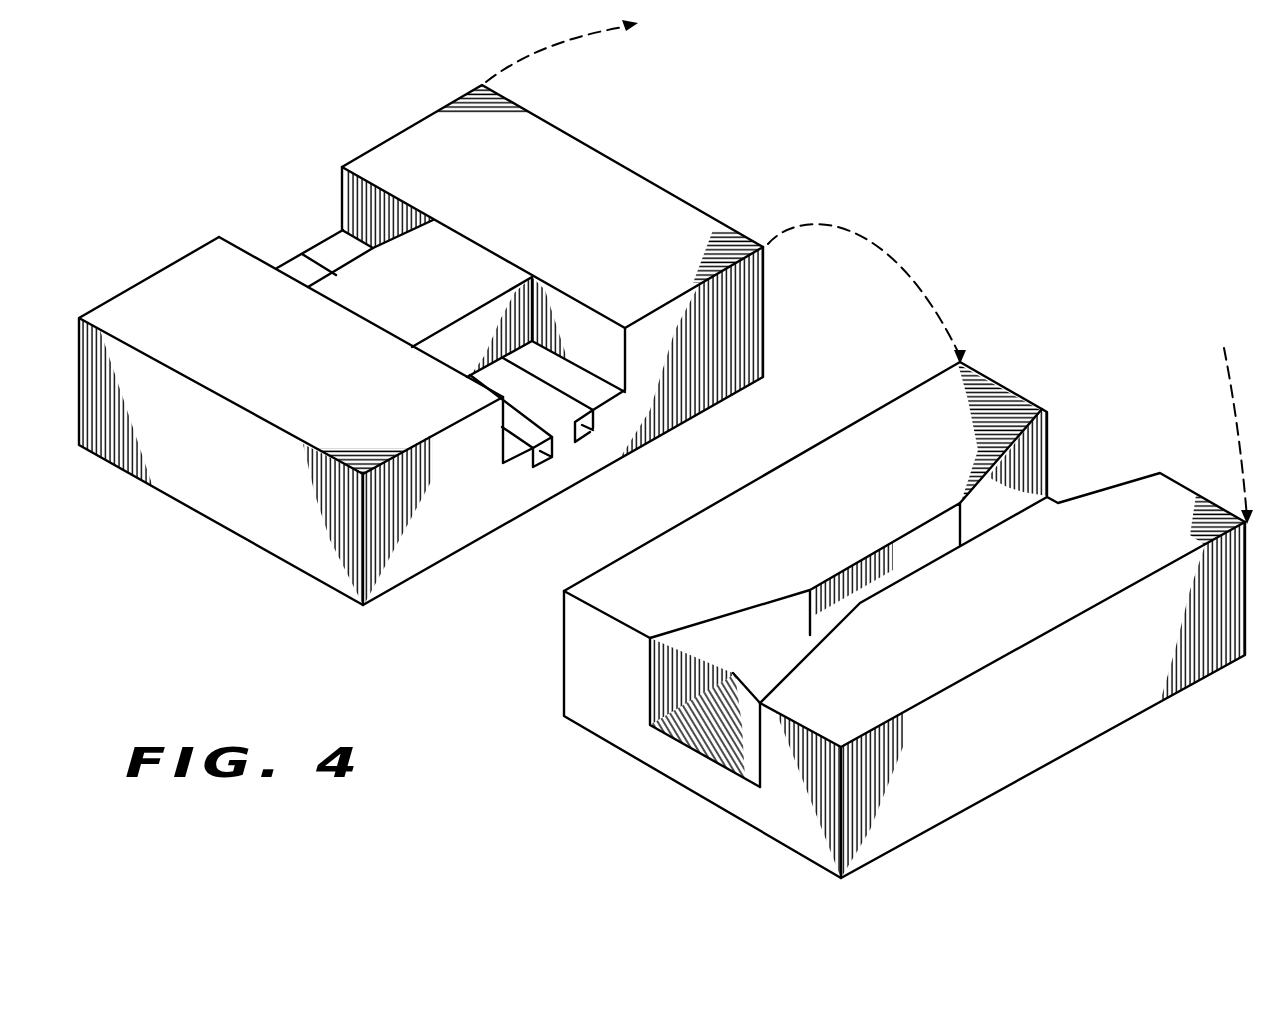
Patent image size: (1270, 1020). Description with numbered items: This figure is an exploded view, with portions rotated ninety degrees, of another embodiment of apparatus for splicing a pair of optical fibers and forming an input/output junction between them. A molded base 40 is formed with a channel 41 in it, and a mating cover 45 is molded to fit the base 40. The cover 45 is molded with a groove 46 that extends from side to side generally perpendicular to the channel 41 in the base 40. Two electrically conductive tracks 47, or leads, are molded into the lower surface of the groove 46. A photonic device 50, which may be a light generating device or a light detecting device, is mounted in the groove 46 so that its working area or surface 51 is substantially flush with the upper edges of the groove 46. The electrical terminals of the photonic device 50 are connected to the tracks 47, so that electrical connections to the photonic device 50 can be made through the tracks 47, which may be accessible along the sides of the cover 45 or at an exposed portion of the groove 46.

The base 40 is at (891, 424).
The channel 41 is at (924, 548).
The cover 45 is at (627, 192).
The groove 46 is at (303, 204).
The electrically conductive track 47 is at (540, 450).
The photonic device 50 is at (437, 245).
The working area or surface 51 is at (486, 272).